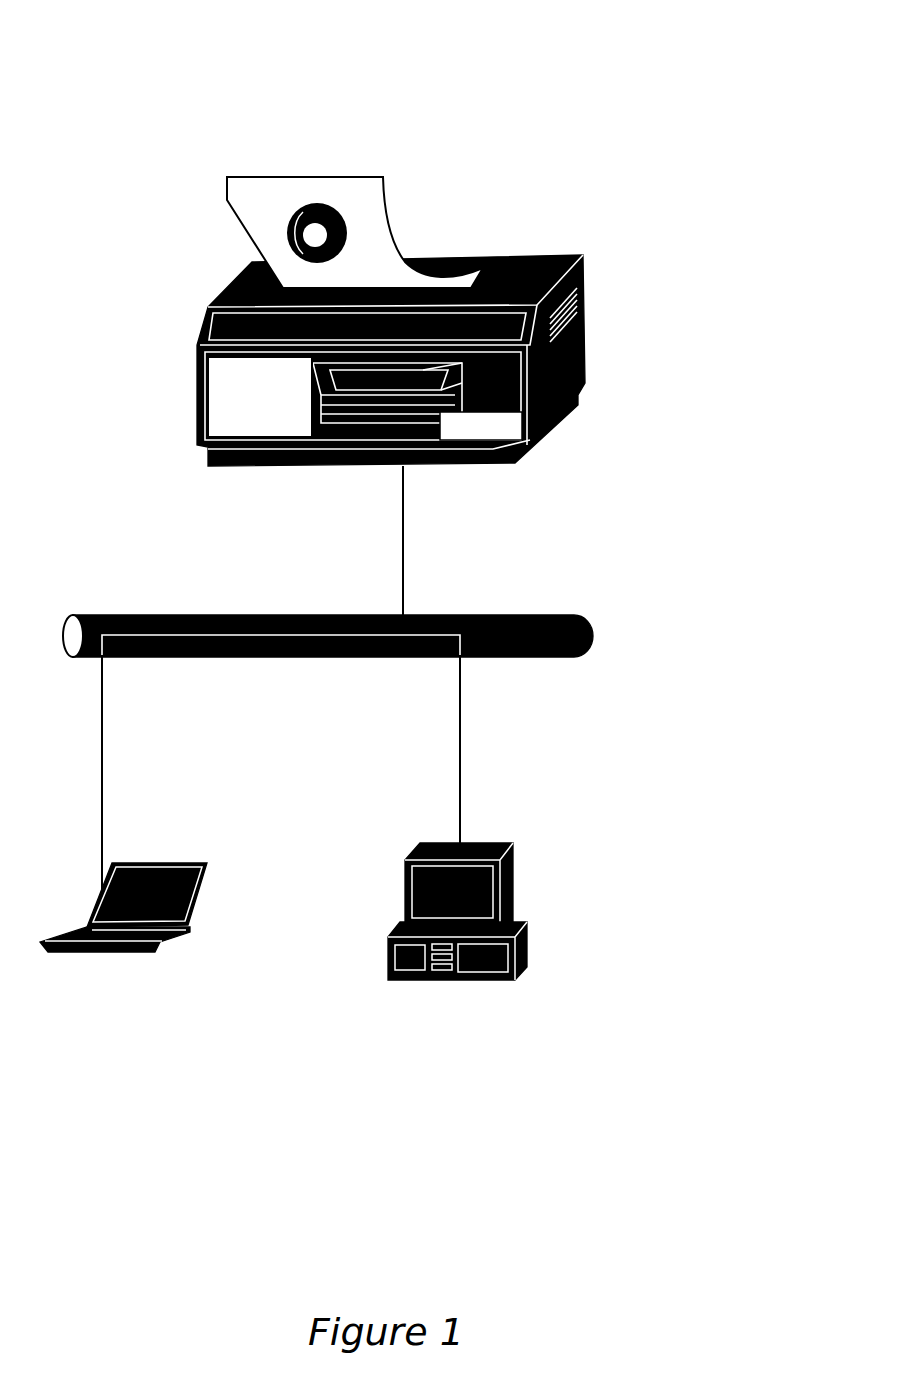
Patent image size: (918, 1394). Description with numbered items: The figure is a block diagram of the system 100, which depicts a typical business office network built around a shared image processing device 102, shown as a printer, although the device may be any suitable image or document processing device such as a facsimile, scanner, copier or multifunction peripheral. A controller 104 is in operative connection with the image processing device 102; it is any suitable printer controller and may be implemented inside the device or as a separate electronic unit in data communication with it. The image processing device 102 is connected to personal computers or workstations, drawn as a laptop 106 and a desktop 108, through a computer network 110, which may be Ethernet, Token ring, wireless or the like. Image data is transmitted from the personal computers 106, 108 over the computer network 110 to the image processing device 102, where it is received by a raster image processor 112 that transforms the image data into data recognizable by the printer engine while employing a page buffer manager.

The system 100 is at (648, 70).
The image processing device 102 is at (391, 330).
The controller 104 is at (497, 442).
The personal computer 106 is at (207, 863).
The personal computer 108 is at (498, 840).
The computer network 110 is at (584, 615).
The raster image processor 112 is at (198, 425).